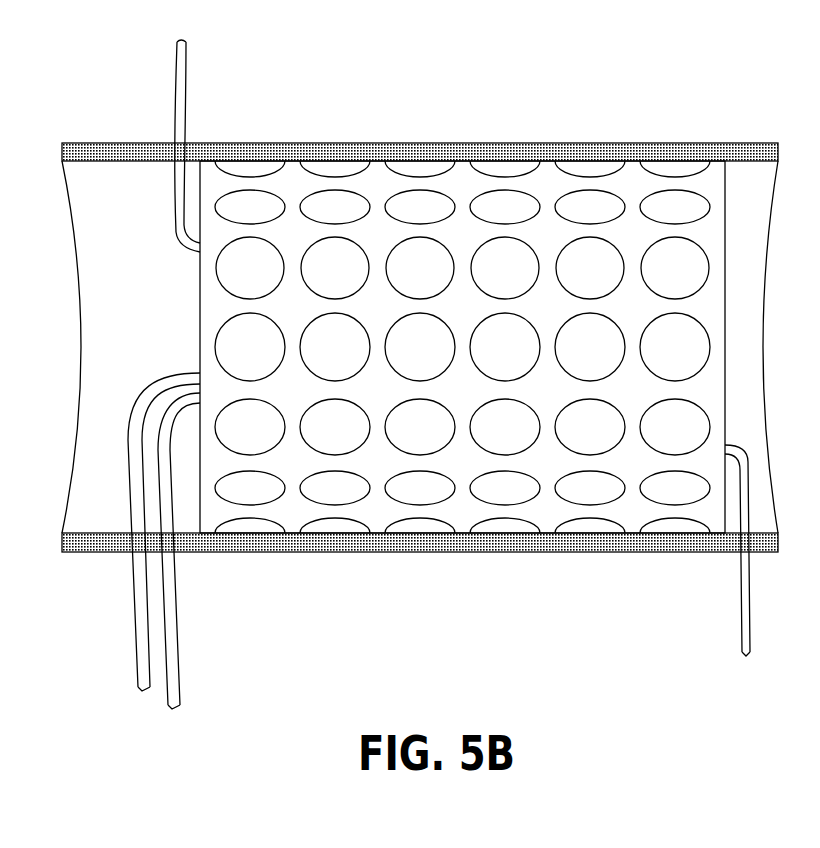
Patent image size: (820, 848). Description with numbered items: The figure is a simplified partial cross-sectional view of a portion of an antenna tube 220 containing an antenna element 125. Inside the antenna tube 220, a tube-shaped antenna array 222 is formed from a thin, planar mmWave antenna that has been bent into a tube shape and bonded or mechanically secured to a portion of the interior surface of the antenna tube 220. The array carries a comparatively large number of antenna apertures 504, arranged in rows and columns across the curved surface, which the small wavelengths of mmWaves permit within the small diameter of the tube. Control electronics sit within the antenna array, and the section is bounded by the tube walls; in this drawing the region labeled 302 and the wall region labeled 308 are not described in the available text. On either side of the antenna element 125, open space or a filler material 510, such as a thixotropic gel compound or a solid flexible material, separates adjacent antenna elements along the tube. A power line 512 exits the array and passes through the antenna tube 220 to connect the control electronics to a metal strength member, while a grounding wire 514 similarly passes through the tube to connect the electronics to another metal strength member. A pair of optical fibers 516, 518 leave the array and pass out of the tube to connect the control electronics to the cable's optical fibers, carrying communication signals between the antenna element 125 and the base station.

The antenna element 125 is at (540, 148).
The antenna tube 220 is at (745, 143).
The tube-shaped antenna array 222 is at (415, 301).
The plate frame 302 is at (212, 288).
The bottom wall 308 is at (88, 525).
The antenna apertures 504 is at (388, 170).
The filler material 510 is at (93, 347).
The power line 512 is at (177, 53).
The grounding wire 514 is at (740, 627).
The optical fiber 516 is at (140, 610).
The optical fiber 518 is at (172, 632).